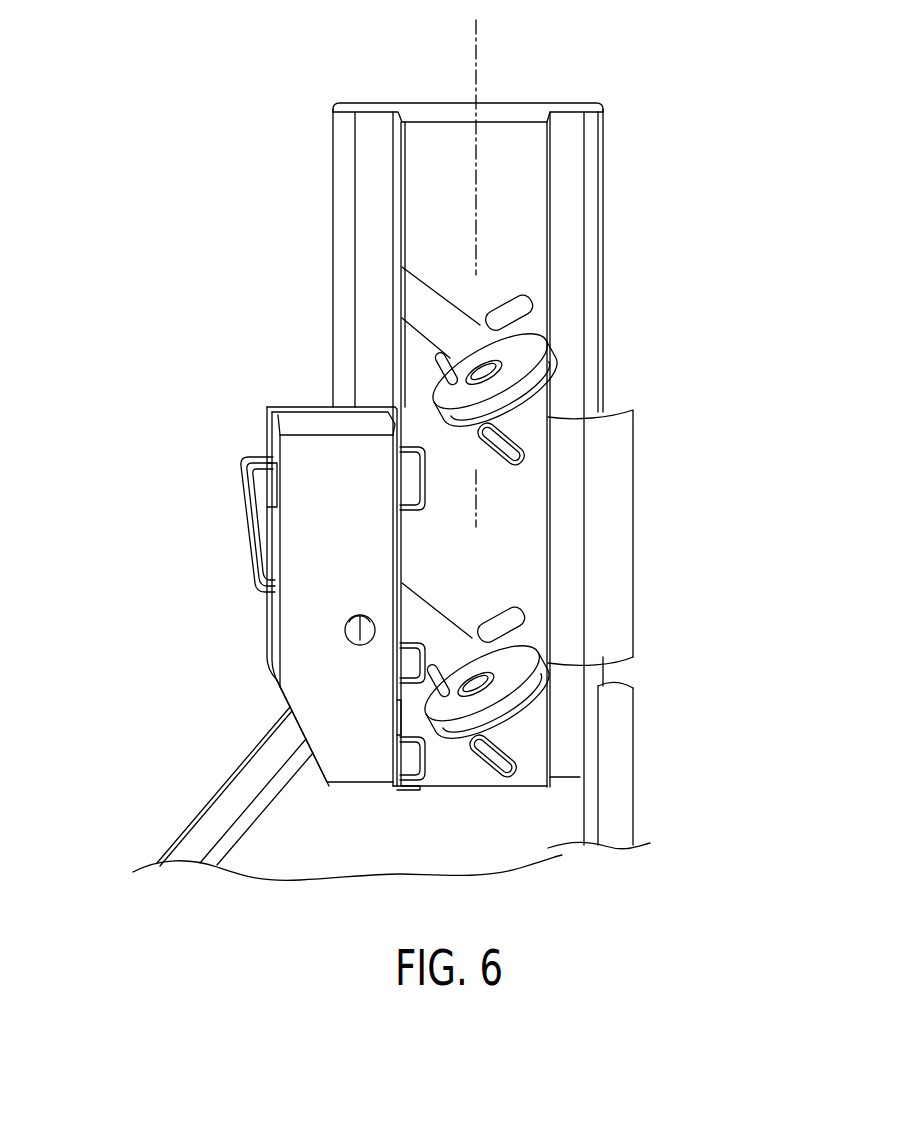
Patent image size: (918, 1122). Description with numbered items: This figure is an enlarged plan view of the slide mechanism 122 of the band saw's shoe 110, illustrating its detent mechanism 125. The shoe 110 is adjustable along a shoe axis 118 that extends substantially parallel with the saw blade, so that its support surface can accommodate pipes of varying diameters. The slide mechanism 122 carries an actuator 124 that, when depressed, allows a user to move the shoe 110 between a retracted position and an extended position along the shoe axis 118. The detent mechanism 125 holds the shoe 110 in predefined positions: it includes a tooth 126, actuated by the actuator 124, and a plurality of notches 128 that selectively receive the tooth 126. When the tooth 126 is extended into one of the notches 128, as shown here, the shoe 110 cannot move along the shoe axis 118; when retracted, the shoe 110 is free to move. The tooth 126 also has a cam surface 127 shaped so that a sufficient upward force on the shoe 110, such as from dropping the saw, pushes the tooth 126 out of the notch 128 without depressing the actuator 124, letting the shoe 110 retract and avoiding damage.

The shoe 110 is at (217, 823).
The shoe axis 118 is at (478, 57).
The slide mechanism 122 is at (187, 406).
The actuator 124 is at (250, 503).
The detent mechanism 125 is at (357, 807).
The tooth 126 is at (405, 763).
The cam surface 127 is at (417, 730).
The notches 128 is at (425, 489).